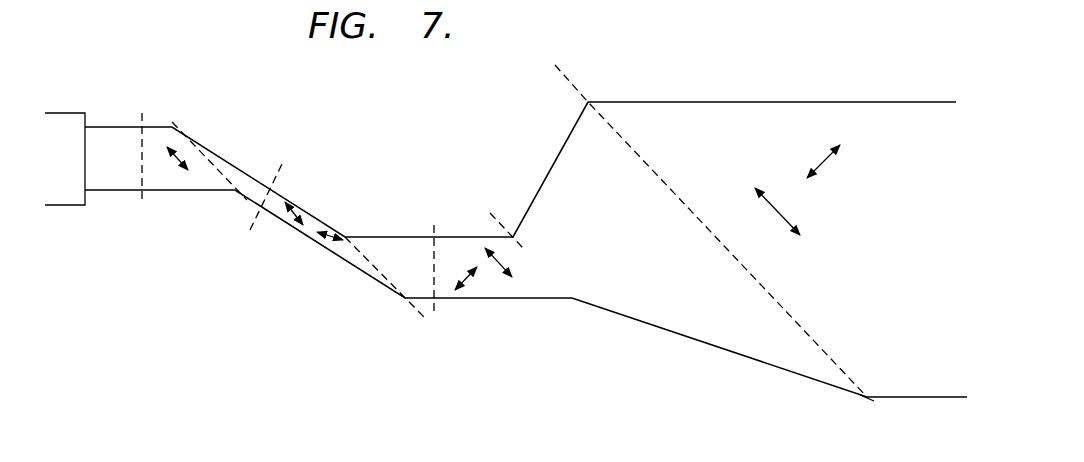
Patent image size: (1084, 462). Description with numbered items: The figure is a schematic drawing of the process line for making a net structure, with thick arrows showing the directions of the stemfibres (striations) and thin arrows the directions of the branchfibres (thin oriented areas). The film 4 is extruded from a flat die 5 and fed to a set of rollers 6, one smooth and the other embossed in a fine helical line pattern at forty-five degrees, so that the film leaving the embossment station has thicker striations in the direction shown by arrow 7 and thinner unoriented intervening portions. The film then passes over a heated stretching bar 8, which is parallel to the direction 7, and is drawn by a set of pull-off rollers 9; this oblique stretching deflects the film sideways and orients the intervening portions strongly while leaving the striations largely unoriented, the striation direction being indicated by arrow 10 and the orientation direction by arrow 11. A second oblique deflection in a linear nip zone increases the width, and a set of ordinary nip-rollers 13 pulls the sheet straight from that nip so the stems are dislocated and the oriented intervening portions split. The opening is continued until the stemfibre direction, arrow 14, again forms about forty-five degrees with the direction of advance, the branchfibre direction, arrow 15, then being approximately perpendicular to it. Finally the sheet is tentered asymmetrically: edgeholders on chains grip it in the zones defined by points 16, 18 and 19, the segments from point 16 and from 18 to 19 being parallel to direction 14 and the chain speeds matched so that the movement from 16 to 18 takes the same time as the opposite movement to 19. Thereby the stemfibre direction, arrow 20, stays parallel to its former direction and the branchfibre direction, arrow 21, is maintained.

The film 4 is at (113, 175).
The flat die 5 is at (70, 174).
The set of rollers 6 is at (142, 203).
The arrow 7 is at (178, 158).
The heated stretching bar 8 is at (158, 113).
The set of pull-off rollers 9 is at (280, 175).
The arrow 10 is at (291, 216).
The arrow 11 is at (335, 235).
The set of nip-rollers 13 is at (434, 225).
The arrow 14 is at (500, 262).
The arrow 15 is at (467, 280).
The tenter zone point 16 is at (490, 213).
The tenter zone point 18 is at (555, 65).
The tenter zone point 19 is at (880, 410).
The arrow 20 is at (775, 208).
The arrow 21 is at (825, 160).